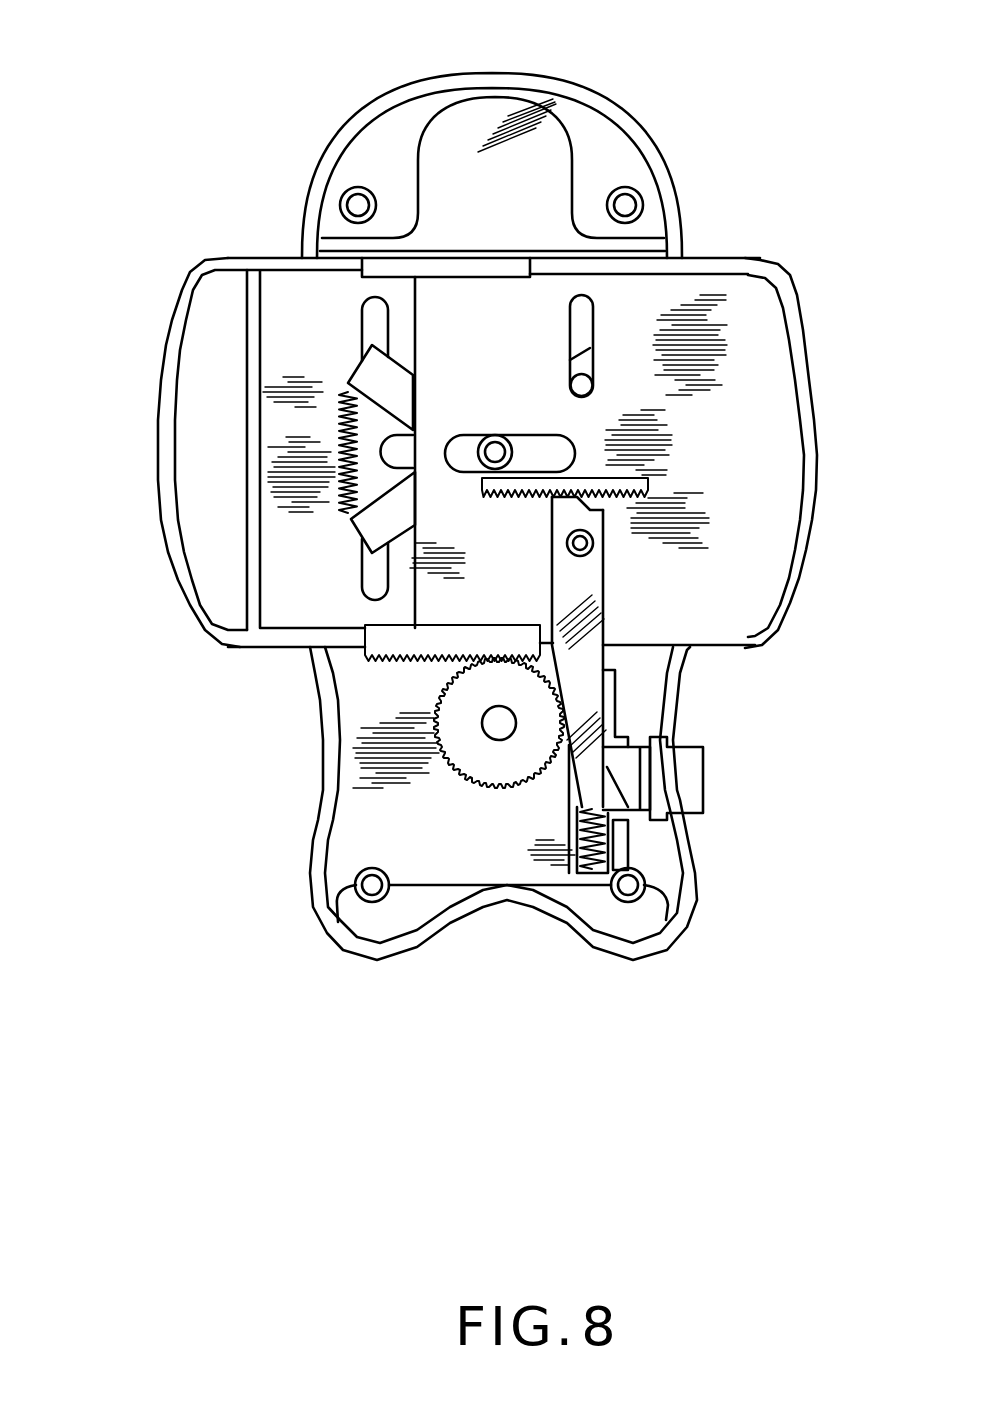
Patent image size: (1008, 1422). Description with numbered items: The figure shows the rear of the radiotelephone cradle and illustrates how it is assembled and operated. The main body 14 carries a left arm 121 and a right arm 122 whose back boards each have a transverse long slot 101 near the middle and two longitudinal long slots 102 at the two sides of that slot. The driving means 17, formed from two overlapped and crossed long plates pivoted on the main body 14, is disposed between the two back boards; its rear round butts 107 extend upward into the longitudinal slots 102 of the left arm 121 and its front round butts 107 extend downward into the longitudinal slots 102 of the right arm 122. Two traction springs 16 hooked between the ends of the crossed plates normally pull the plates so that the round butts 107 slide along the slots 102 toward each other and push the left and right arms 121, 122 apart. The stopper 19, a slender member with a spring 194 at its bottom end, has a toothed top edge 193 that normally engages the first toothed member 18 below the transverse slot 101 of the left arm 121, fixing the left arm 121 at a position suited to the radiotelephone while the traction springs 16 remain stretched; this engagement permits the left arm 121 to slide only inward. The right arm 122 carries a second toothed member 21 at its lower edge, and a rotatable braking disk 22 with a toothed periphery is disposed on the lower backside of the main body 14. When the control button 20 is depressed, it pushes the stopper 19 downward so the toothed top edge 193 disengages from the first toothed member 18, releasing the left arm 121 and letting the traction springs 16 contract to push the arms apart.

The main body 14 is at (540, 157).
The longitudinal long slots 102 is at (373, 315).
The round butts 107 is at (592, 386).
The driving means 17 is at (373, 367).
The traction springs 16 is at (347, 467).
The right arm 122 is at (182, 548).
The left arm 121 is at (808, 523).
The transverse long slot 101 is at (460, 455).
The first toothed member 18 is at (637, 493).
The toothed top edge 193 is at (613, 500).
The stopper 19 is at (588, 655).
The control button 20 is at (697, 773).
The second toothed member 21 is at (436, 665).
The braking disk 22 is at (467, 747).
The spring 194 is at (573, 870).